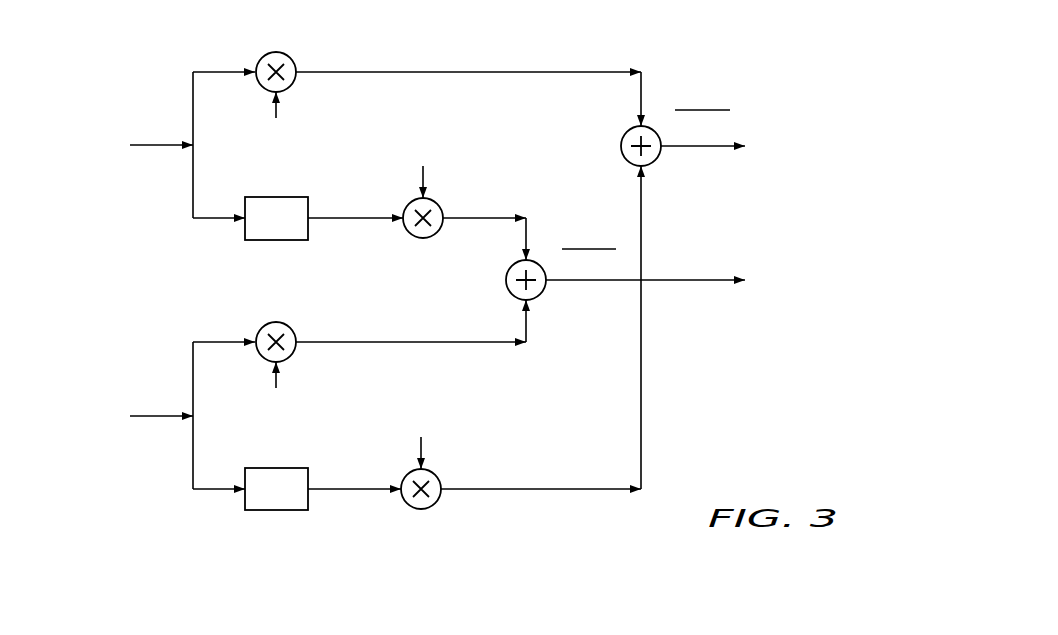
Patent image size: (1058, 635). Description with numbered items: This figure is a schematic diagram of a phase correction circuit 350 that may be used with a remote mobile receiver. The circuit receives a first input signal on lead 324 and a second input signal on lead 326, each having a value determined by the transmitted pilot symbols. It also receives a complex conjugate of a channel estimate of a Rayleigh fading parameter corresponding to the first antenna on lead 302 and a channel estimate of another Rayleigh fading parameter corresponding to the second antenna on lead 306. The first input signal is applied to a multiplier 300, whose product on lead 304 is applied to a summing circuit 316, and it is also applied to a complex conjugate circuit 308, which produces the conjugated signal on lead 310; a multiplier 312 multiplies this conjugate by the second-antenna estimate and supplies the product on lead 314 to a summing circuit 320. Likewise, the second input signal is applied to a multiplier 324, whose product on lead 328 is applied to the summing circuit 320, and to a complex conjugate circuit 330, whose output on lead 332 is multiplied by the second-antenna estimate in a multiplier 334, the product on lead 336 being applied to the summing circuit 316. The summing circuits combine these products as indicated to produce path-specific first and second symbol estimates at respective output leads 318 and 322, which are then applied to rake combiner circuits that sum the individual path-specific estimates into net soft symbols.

The multiplier 300 is at (258, 62).
The lead 302 is at (281, 114).
The multiplier output lead 304 is at (535, 70).
The lead 306 is at (420, 174).
The complex conjugate circuit 308 is at (278, 242).
The lead 310 is at (358, 222).
The multiplier 312 is at (414, 240).
The multiplier output lead 314 is at (484, 216).
The summing circuit 316 is at (620, 150).
The output lead 318 is at (682, 150).
The summing circuit 320 is at (540, 296).
The output lead 322 is at (683, 284).
The lead 324 is at (156, 150).
The lead 326 is at (156, 421).
The multiplier output lead 328 is at (484, 346).
The complex conjugate circuit 330 is at (278, 512).
The lead 332 is at (358, 492).
The multiplier 334 is at (412, 511).
The multiplier output lead 336 is at (535, 487).
The correction circuit 350 is at (704, 403).